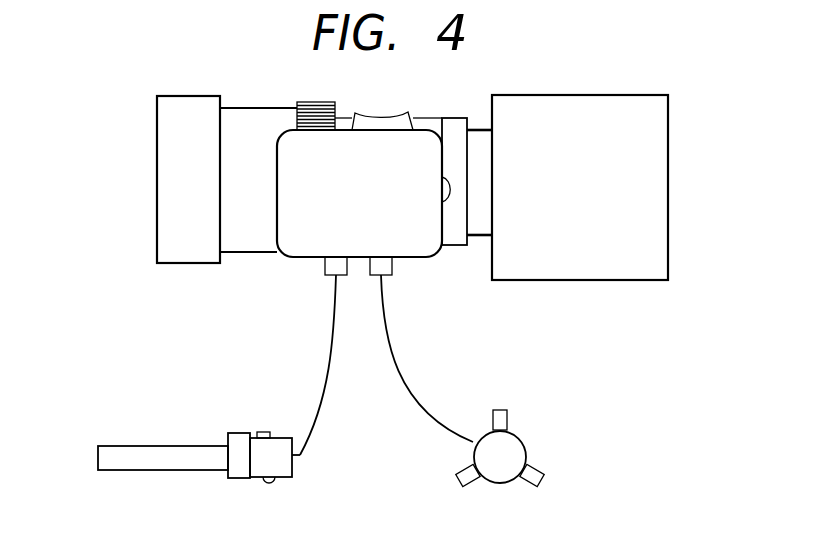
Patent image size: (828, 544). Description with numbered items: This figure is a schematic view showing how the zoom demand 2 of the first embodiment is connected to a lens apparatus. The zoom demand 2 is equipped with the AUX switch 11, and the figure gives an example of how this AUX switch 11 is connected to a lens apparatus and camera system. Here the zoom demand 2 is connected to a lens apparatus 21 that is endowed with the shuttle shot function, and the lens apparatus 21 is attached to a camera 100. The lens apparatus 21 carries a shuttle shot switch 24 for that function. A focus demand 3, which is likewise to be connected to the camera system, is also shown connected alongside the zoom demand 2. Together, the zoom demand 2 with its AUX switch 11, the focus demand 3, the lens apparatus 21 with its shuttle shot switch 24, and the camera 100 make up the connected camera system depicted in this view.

The lens apparatus 21 is at (185, 255).
The shuttle shot switch 24 is at (449, 191).
The camera 100 is at (615, 270).
The zoom demand 2 is at (157, 449).
The AUX switch 11 is at (270, 481).
The focus demand 3 is at (502, 477).